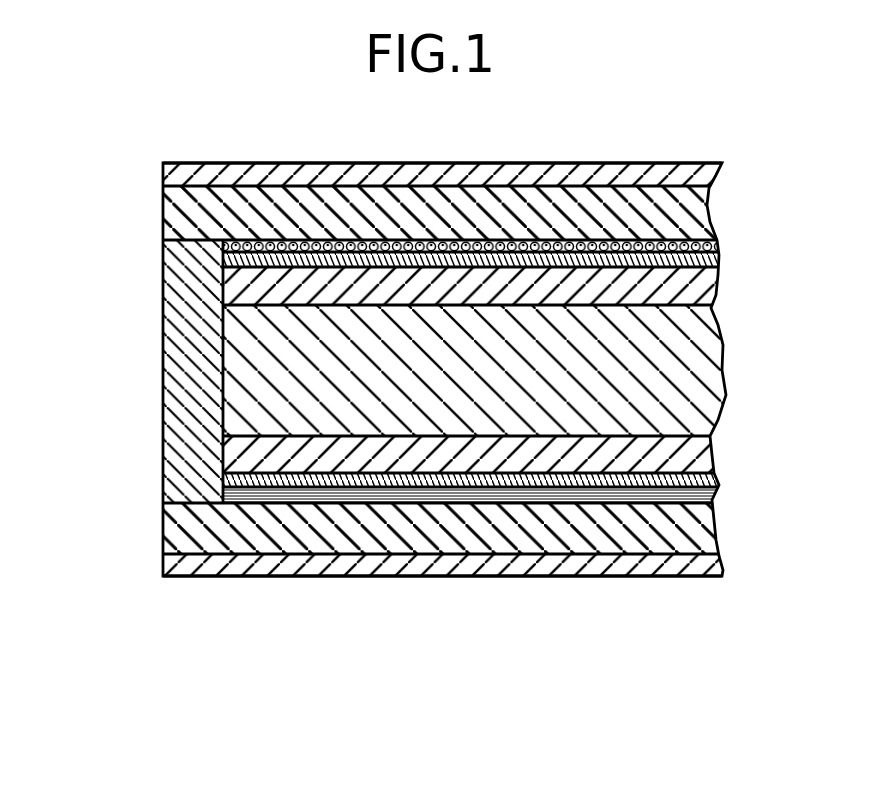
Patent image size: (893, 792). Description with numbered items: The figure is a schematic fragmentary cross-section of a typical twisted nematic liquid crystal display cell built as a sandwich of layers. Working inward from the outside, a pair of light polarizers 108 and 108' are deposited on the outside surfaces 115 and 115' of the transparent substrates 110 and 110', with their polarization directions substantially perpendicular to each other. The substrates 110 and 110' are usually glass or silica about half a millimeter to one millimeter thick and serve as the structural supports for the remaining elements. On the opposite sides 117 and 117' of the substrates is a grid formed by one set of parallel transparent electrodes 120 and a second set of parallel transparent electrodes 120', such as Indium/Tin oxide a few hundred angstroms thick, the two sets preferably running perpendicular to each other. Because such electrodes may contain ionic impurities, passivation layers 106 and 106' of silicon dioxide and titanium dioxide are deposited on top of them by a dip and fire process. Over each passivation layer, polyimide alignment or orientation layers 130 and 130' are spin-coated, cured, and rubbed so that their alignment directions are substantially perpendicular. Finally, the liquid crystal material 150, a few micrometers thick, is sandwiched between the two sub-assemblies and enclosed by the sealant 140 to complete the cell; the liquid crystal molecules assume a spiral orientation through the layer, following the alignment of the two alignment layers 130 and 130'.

The light polarizer 108 is at (431, 144).
The outside surface 115 is at (442, 135).
The transparent substrate 110 is at (404, 205).
The passivation layer 106 is at (468, 184).
The parallel transparent electrodes 120 is at (476, 174).
The opposite side 117 is at (479, 187).
The alignment layer 130 is at (404, 278).
The liquid crystal material 150 is at (258, 385).
The sealant 140 is at (192, 368).
The alignment layer 130' is at (403, 466).
The opposite side 117' is at (517, 511).
The parallel transparent electrodes 120' is at (478, 570).
The transparent substrate 110' is at (400, 533).
The passivation layer 106' is at (468, 558).
The light polarizer 108' is at (400, 587).
The outside surface 115' is at (469, 598).